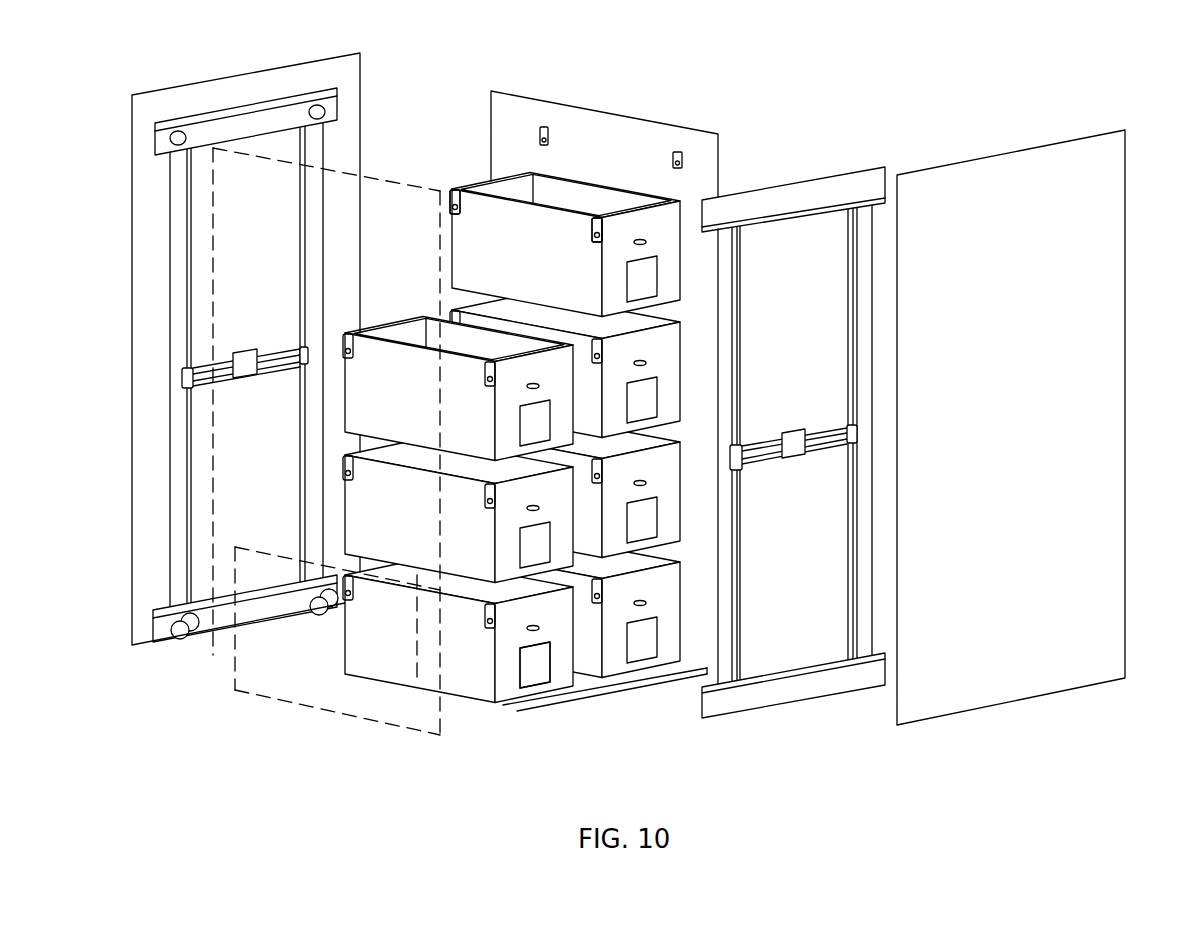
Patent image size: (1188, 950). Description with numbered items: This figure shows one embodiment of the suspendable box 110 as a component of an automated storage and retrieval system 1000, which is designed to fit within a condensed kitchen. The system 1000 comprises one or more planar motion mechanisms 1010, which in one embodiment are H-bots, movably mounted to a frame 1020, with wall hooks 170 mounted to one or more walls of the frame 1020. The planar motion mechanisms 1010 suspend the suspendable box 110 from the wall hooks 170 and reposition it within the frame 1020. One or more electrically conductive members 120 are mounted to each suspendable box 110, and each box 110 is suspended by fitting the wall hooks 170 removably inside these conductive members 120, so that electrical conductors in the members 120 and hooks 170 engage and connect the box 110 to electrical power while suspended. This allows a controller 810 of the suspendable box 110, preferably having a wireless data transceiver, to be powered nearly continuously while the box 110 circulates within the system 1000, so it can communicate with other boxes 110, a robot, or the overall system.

The automated storage and retrieval system 1000 is at (490, 77).
The suspendable box 110 is at (610, 688).
The electrically conductive member 120 is at (455, 190).
The wall hook 170 is at (548, 145).
The controller 810 is at (530, 668).
The planar motion mechanism 1010 is at (205, 623).
The frame 1020 is at (242, 73).